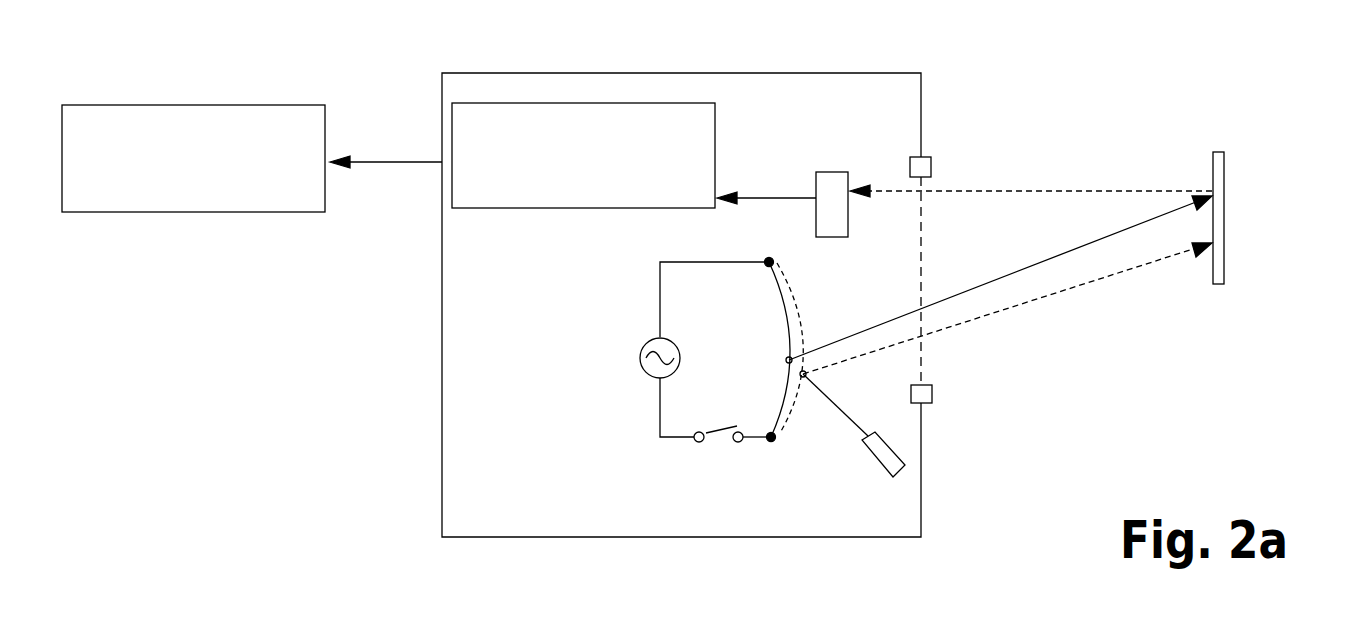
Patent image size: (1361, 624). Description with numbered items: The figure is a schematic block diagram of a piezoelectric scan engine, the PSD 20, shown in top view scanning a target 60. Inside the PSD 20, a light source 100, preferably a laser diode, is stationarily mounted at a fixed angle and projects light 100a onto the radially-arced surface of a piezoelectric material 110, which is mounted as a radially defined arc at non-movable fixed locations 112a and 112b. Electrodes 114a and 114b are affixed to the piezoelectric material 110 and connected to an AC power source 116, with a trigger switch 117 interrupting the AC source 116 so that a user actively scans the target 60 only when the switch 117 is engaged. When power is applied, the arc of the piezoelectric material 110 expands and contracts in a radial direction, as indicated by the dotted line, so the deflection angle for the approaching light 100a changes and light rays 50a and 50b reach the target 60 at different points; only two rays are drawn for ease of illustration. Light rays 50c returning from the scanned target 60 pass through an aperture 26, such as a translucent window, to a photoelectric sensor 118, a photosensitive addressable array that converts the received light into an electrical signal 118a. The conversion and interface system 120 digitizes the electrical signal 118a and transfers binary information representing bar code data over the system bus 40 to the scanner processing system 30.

The piezoelectric scan engine 20 is at (668, 73).
The aperture 26 is at (921, 362).
The scanner processing system 30 is at (213, 105).
The system bus 40 is at (358, 162).
The light ray 50a is at (962, 290).
The light ray 50b is at (970, 320).
The light rays 50c is at (983, 190).
The target 60 is at (1224, 222).
The light source 100 is at (893, 478).
The light 100a is at (853, 427).
The piezoelectric material 110 is at (788, 355).
The non-movable fixed location 112a is at (763, 262).
The non-movable fixed location 112b is at (765, 440).
The electrode 114a is at (660, 290).
The electrode 114b is at (745, 437).
The AC power source 116 is at (645, 343).
The trigger switch 117 is at (713, 432).
The photoelectric sensor 118 is at (826, 237).
The electrical signal 118a is at (800, 200).
The conversion and interface system 120 is at (500, 103).